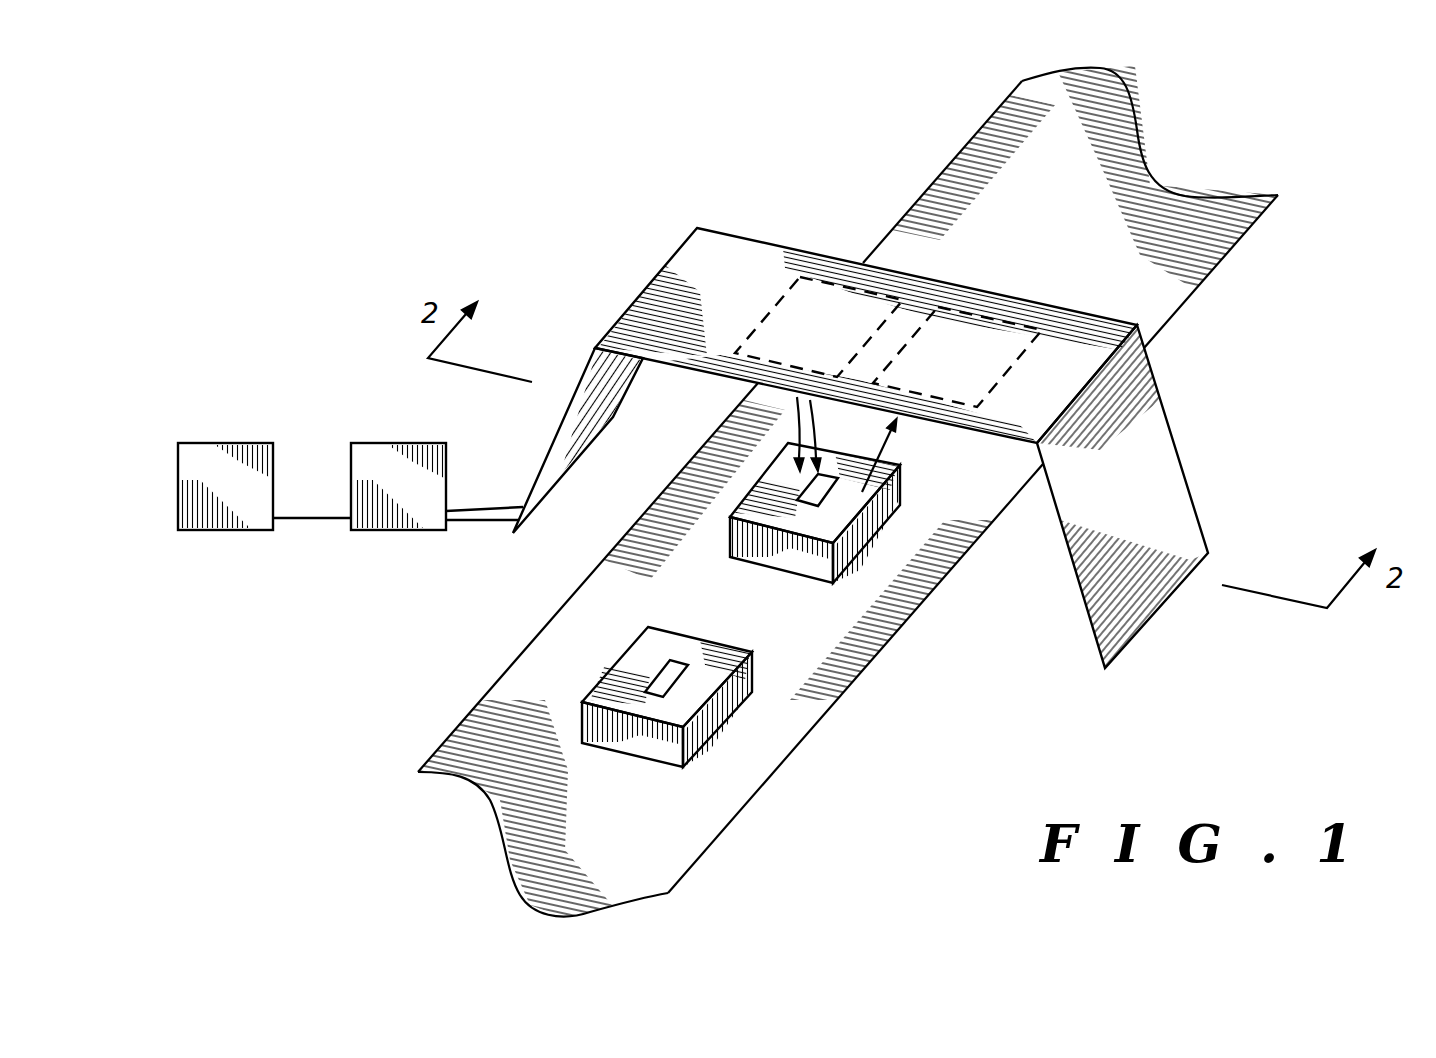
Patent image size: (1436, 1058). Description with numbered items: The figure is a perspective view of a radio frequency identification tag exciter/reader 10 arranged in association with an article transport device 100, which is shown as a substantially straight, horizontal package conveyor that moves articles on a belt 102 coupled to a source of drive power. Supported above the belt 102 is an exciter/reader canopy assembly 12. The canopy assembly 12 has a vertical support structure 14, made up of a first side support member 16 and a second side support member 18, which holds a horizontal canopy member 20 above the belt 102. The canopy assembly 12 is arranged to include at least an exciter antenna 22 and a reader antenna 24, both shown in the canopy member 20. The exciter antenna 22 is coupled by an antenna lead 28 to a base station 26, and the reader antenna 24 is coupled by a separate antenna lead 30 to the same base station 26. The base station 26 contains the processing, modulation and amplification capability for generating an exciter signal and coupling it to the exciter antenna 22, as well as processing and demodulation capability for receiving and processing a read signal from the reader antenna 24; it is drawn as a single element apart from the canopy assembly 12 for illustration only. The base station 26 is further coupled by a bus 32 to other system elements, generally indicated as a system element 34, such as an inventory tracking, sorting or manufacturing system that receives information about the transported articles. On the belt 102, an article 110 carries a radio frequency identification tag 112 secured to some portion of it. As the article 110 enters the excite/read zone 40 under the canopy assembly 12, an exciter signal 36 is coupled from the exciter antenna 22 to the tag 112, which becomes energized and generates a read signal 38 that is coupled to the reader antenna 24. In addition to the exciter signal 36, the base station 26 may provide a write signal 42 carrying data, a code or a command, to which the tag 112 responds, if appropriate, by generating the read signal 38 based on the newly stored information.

The radio frequency identification tag exciter/reader 10 is at (427, 579).
The exciter/reader canopy assembly 12 is at (756, 216).
The vertical support structure 14 is at (1209, 470).
The first side support member 16 is at (1157, 420).
The second side support member 18 is at (572, 441).
The horizontal canopy member 20 is at (1090, 328).
The exciter antenna 22 is at (881, 292).
The reader antenna 24 is at (996, 313).
The base station 26 is at (366, 452).
The antenna lead 28 is at (484, 507).
The antenna lead 30 is at (473, 524).
The bus 32 is at (312, 521).
The system element 34 is at (194, 452).
The exciter signal 36 is at (797, 438).
The read signal 38 is at (872, 438).
The excite/read zone 40 is at (992, 503).
The write signal 42 is at (820, 435).
The article transport device 100 is at (747, 862).
The belt 102 is at (722, 810).
The article 110 is at (748, 545).
The radio frequency identification tag 112 is at (815, 492).